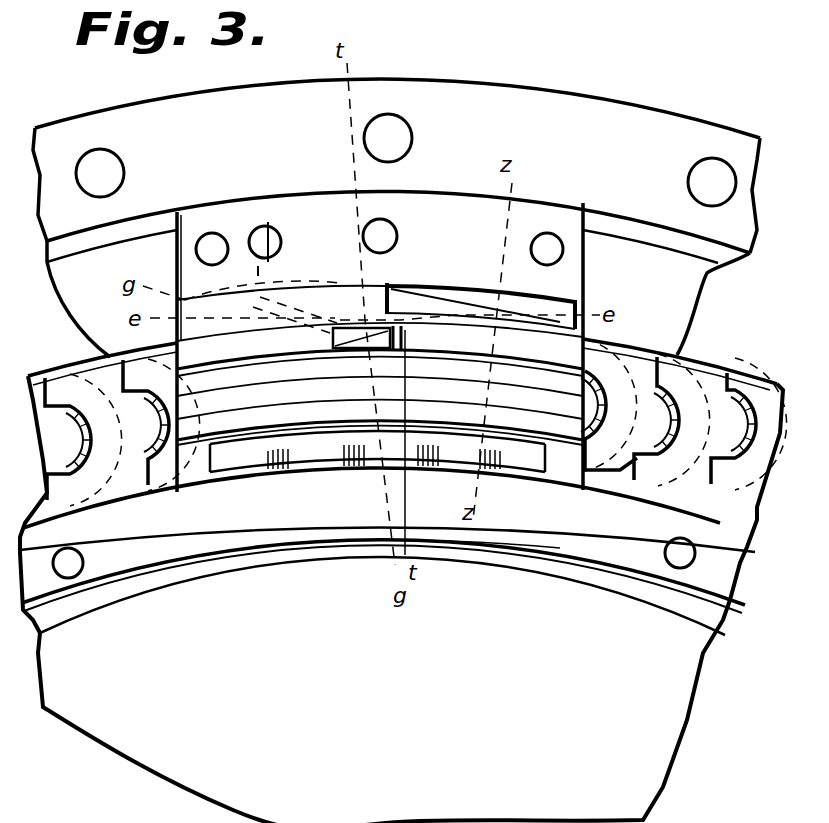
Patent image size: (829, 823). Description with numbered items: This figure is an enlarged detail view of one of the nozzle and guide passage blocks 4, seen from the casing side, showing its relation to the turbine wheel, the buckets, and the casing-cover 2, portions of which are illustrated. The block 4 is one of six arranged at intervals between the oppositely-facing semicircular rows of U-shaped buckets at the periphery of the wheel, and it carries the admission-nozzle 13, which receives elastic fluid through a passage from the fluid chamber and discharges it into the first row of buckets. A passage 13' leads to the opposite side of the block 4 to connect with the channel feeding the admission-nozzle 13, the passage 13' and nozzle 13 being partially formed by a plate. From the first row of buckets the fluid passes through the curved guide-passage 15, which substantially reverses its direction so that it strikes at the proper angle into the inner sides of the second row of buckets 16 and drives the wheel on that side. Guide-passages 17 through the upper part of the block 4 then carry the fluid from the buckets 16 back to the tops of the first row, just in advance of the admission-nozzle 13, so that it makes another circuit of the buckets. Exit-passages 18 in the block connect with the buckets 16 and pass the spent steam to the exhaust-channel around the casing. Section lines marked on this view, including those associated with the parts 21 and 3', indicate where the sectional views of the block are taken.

The casing-cover 2 is at (508, 100).
The nozzle and guide passage block 4 is at (170, 282).
The guide block 21 is at (578, 212).
The admission-nozzle 13 is at (364, 299).
The passage 13' is at (290, 248).
The exit-passage 18 is at (490, 300).
The guide-passage 17 is at (371, 425).
The guide-passage 15 is at (455, 452).
The second row of buckets 16 is at (730, 447).
The lower plate 3' is at (401, 599).